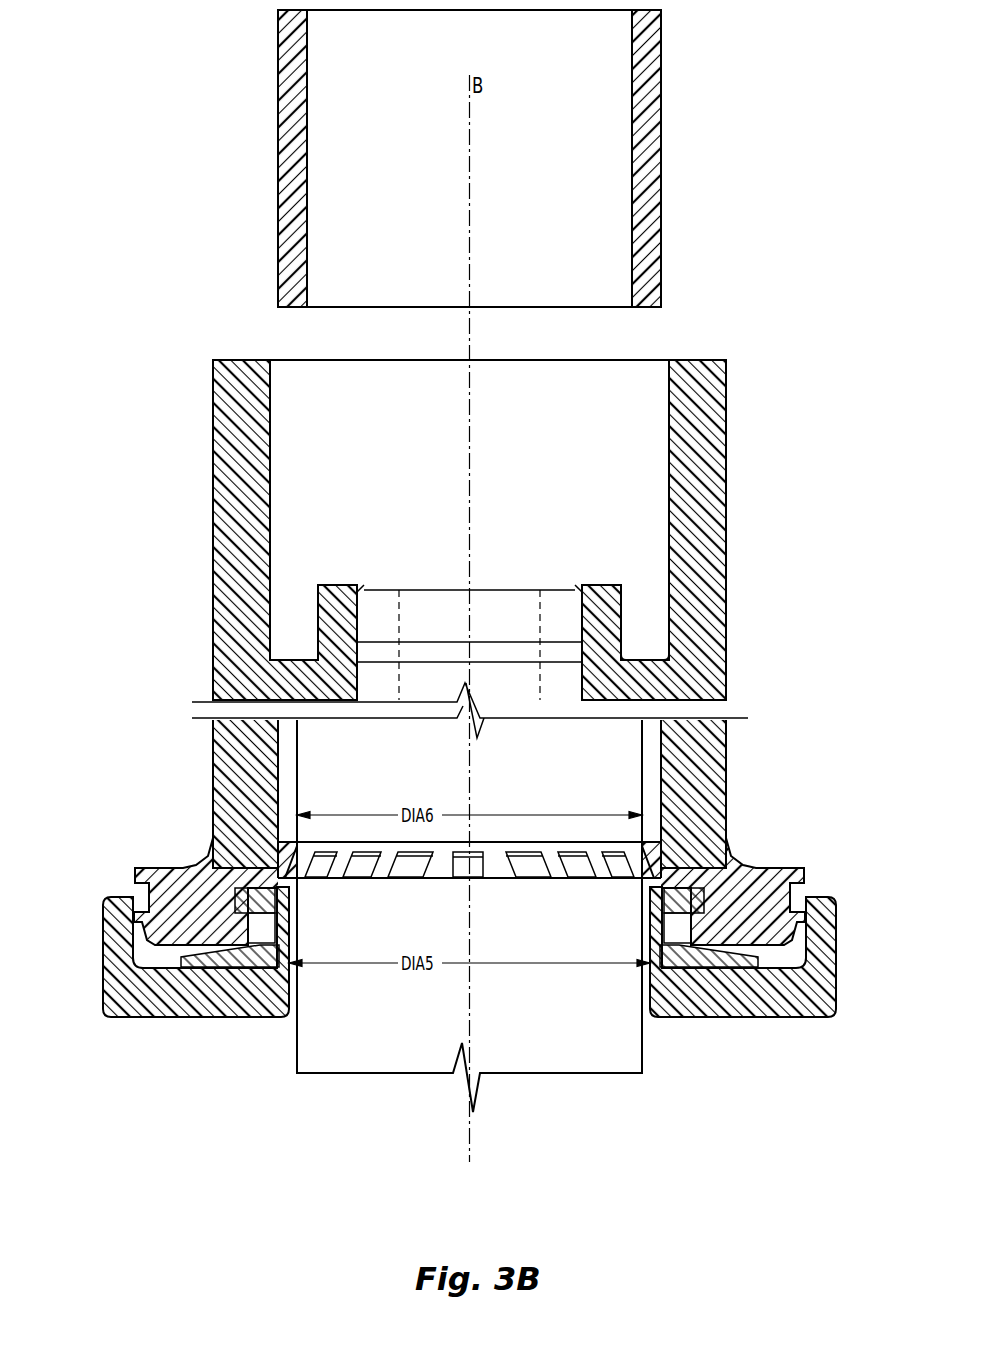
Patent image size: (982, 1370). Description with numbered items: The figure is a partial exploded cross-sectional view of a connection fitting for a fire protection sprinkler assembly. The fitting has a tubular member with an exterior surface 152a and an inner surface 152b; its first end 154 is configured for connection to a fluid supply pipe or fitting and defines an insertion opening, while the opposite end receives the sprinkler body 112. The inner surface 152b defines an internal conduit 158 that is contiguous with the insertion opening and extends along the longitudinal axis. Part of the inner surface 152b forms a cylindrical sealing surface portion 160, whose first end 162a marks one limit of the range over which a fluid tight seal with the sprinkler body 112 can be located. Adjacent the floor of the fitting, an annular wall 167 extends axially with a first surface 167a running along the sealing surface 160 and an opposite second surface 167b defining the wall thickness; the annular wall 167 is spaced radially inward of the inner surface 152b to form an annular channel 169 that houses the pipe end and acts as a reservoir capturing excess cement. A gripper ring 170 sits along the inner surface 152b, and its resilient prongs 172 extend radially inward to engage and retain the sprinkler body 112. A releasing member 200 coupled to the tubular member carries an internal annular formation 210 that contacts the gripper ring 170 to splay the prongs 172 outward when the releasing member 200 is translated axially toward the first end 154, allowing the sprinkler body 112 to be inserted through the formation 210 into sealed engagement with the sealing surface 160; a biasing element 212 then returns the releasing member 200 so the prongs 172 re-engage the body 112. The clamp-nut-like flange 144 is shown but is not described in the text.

The sprinkler body 112 is at (642, 1053).
The clamp nut 144 is at (183, 866).
The exterior surface 152a is at (213, 525).
The inner surface 152b is at (668, 448).
The first end 154 is at (220, 416).
The internal conduit 158 is at (406, 427).
The cylindrical sealing surface portion 160 is at (318, 650).
The first end of the sealing surface 162a is at (366, 590).
The annular wall 167 is at (607, 585).
The first surface of the annular wall 167a is at (582, 673).
The second surface of the annular wall 167b is at (622, 598).
The annular channel 169 is at (649, 616).
The gripper ring 170 is at (730, 858).
The prongs 172 is at (540, 880).
The releasing member 200 is at (130, 1001).
The internal annular formation 210 is at (280, 935).
The biasing element 212 is at (706, 948).